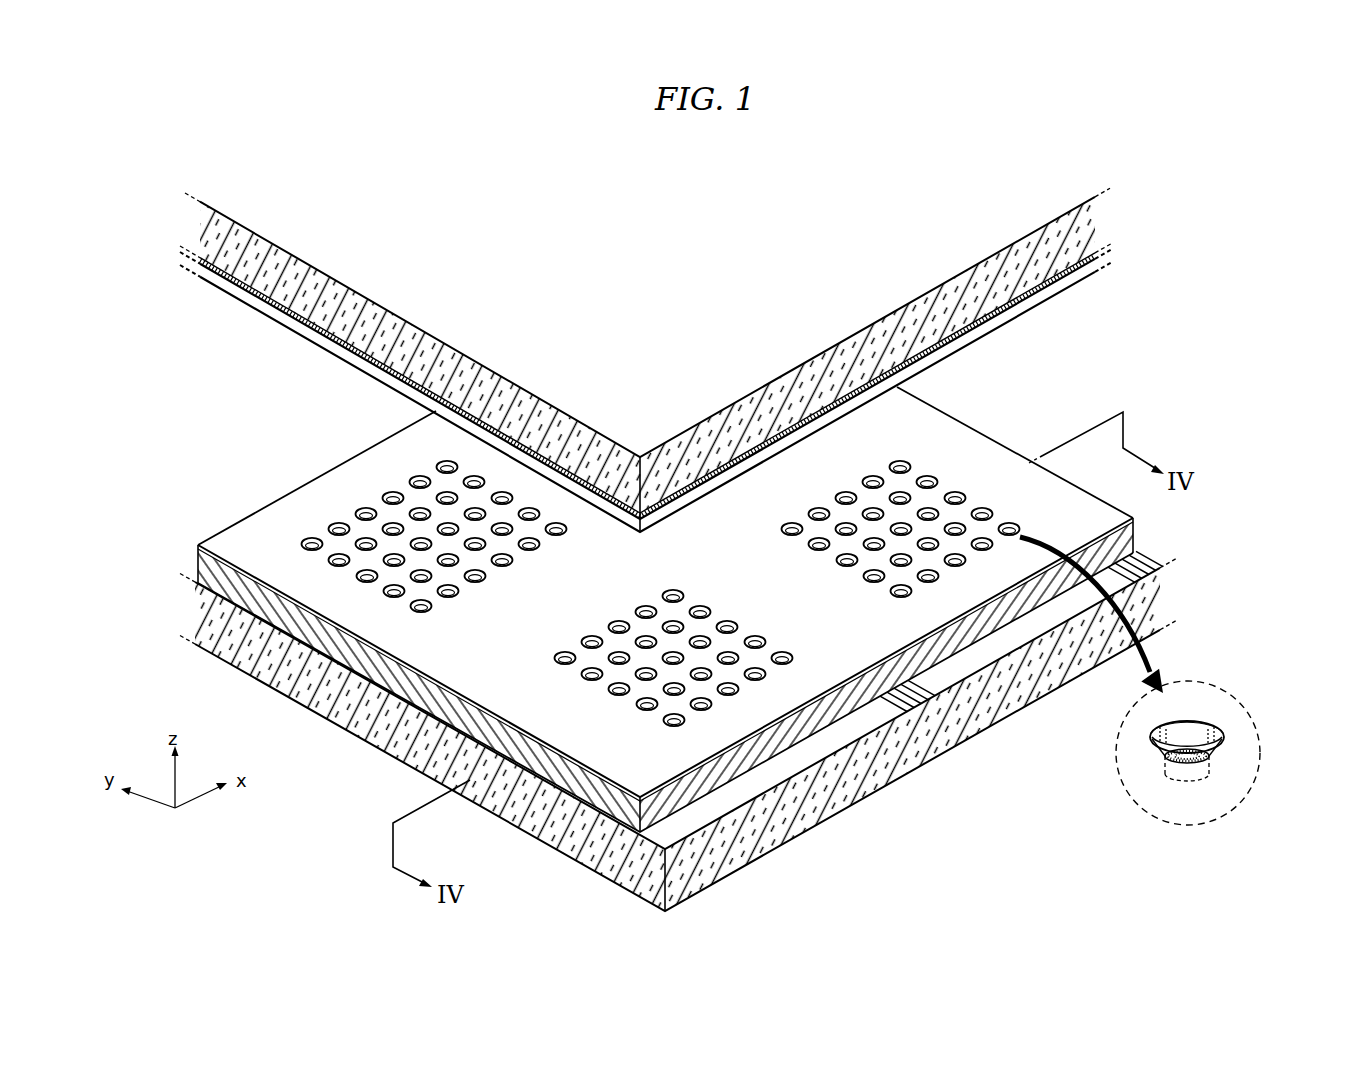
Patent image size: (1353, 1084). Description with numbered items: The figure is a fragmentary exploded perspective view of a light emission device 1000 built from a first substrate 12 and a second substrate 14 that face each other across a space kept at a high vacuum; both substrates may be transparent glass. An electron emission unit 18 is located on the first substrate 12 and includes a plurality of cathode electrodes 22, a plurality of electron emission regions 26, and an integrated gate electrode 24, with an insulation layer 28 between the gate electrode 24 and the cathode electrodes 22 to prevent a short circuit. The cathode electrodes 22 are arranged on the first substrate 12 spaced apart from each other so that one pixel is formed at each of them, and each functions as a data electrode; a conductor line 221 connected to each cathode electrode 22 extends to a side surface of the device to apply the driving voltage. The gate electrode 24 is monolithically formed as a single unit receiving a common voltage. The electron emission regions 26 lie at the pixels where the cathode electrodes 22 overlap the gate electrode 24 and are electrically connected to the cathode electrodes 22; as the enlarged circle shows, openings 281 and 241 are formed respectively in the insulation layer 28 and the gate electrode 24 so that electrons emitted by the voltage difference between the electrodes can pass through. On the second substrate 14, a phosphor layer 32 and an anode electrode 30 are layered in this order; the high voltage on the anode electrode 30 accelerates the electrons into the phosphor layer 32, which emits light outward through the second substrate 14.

The light emission device 1000 is at (742, 215).
The first substrate 12 is at (570, 848).
The second substrate 14 is at (258, 275).
The electron emission unit 18 is at (750, 604).
The cathode electrodes 22 is at (1002, 657).
The conductor line 221 is at (1146, 572).
The gate electrode 24 is at (447, 665).
The opening 241 is at (367, 508).
The electron emission regions 26 is at (1210, 757).
The insulation layer 28 is at (1124, 547).
The opening 281 is at (393, 493).
The anode electrode 30 is at (313, 343).
The phosphor layer 32 is at (280, 315).